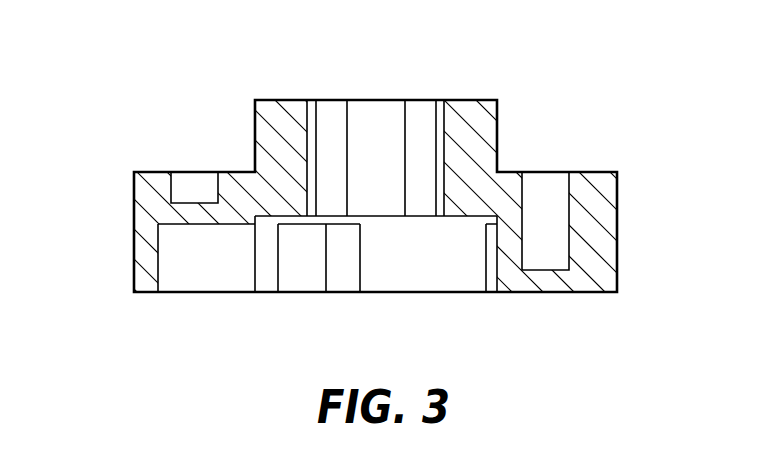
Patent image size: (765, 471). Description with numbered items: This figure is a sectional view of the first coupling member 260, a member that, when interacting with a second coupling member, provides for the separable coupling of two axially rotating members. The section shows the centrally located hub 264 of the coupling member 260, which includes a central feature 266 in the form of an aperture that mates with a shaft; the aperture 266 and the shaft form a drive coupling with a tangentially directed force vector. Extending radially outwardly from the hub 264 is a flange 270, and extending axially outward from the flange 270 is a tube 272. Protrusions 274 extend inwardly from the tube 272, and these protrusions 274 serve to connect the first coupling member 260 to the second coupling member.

The first coupling member 260 is at (283, 67).
The hub 264 is at (497, 137).
The central feature (aperture) 266 is at (375, 133).
The flange 270 is at (197, 203).
The tube 272 is at (134, 209).
The protrusions 274 is at (528, 272).